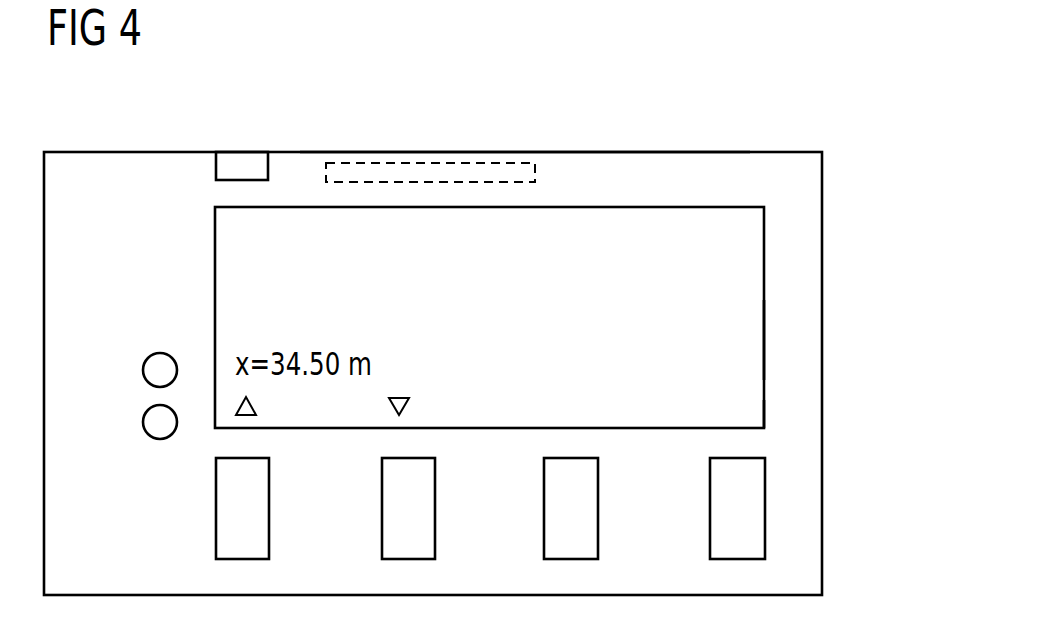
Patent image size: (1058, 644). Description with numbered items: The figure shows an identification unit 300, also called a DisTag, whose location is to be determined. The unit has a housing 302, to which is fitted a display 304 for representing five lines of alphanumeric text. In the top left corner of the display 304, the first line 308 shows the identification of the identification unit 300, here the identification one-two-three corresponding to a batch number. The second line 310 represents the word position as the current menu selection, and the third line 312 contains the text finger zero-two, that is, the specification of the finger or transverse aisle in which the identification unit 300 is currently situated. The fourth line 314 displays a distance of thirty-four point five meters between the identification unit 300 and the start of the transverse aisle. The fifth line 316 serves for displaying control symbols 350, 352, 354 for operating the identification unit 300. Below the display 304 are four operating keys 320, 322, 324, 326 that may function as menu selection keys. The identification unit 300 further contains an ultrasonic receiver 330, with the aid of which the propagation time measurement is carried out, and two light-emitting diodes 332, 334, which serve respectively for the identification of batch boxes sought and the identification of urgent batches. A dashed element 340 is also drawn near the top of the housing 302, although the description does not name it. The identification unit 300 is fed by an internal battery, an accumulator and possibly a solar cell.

The identification unit 300 is at (826, 137).
The housing 302 is at (612, 152).
The display 304 is at (792, 190).
The line 308 is at (212, 222).
The line 310 is at (212, 267).
The line 312 is at (212, 310).
The fourth line 314 is at (773, 347).
The fifth line 316 is at (773, 417).
The operating key 320 is at (216, 510).
The operating key 322 is at (382, 510).
The operating key 324 is at (544, 510).
The operating key 326 is at (710, 510).
The ultrasonic receiver 330 is at (243, 160).
The light-emitting diode 332 is at (143, 370).
The light-emitting diode 334 is at (143, 422).
The sensor field 340 is at (440, 164).
The control symbol 350 is at (258, 407).
The control symbol 352 is at (409, 406).
The control symbol 354 is at (582, 407).